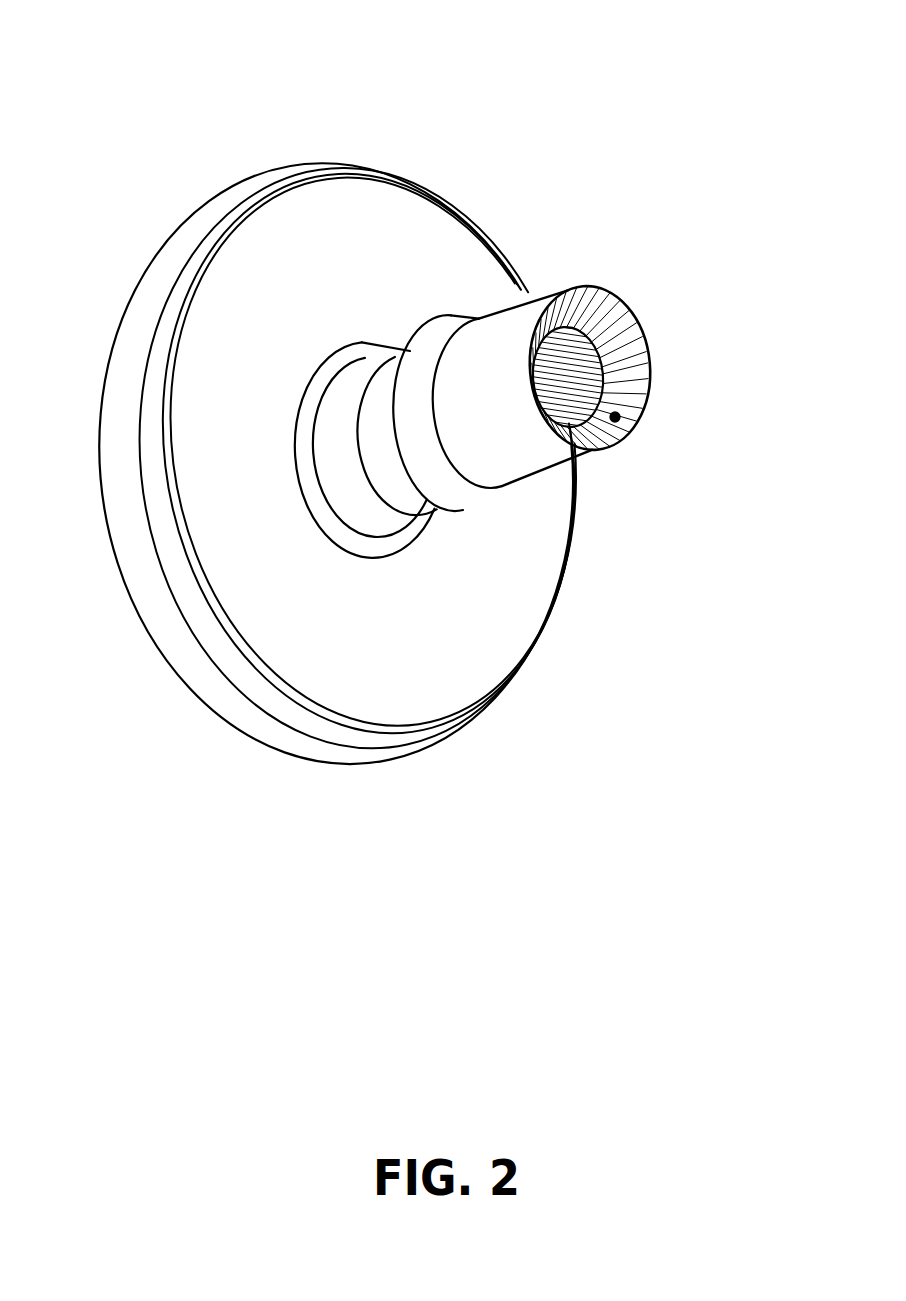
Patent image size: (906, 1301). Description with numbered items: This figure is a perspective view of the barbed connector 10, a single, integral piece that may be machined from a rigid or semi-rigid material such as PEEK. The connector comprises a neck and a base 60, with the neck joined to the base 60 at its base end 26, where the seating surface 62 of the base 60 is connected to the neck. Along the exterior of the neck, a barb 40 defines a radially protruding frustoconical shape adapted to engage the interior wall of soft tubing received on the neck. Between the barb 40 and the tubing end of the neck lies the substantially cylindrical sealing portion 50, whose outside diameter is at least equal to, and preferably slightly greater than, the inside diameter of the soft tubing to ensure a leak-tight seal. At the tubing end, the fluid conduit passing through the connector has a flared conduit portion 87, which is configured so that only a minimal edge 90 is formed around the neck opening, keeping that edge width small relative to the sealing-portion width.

The barbed connector 10 is at (660, 146).
The base end 26 is at (372, 552).
The barb 40 is at (478, 494).
The substantially cylindrical sealing portion 50 is at (530, 443).
The base 60 is at (147, 570).
The seating surface 62 is at (303, 588).
The flared conduit portion 87 is at (623, 420).
The minimal edge 90 is at (650, 393).